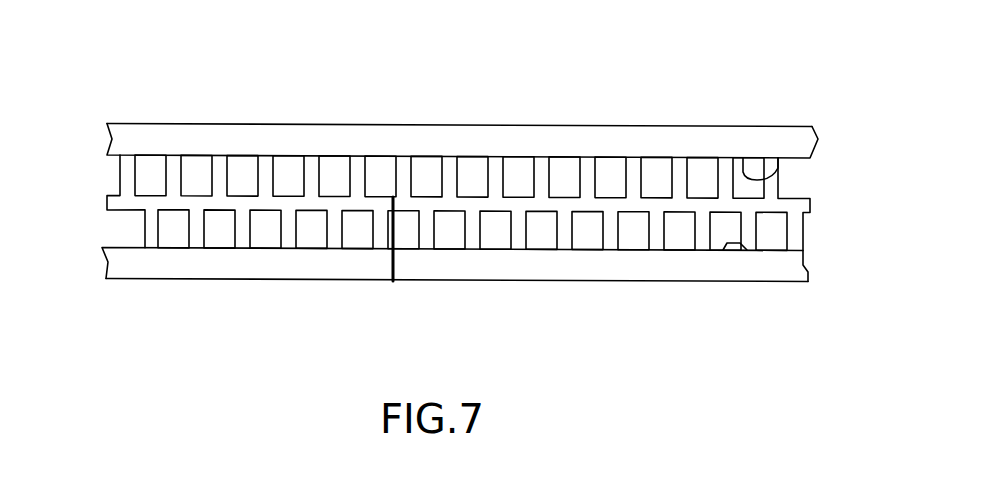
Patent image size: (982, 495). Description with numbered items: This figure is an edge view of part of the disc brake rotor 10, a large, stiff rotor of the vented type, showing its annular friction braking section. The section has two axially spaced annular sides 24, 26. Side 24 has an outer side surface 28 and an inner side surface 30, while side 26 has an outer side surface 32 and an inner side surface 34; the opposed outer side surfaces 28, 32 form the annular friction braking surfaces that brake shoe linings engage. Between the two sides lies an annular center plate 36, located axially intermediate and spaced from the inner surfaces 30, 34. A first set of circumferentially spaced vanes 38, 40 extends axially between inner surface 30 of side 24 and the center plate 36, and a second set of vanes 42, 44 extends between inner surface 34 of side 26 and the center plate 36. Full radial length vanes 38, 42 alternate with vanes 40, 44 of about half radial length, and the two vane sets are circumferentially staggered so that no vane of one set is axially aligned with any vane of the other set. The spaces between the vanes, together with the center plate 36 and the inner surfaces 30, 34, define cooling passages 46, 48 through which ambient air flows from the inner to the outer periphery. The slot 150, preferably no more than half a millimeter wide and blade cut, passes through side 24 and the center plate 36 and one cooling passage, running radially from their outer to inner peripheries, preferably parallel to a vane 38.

The disc brake rotor 10 is at (137, 113).
The annular side 24 is at (575, 270).
The annular side 26 is at (597, 135).
The outer side surface 28 is at (640, 283).
The inner side surface 30 is at (747, 250).
The outer side surface 32 is at (722, 124).
The inner side surface 34 is at (780, 160).
The annular center plate 36 is at (430, 203).
The vanes 38 is at (382, 233).
The vanes 40 is at (425, 238).
The vanes 42 is at (452, 168).
The vanes 44 is at (488, 165).
The cooling passages 46 is at (577, 240).
The cooling passages 48 is at (653, 168).
The slot 150 is at (392, 262).